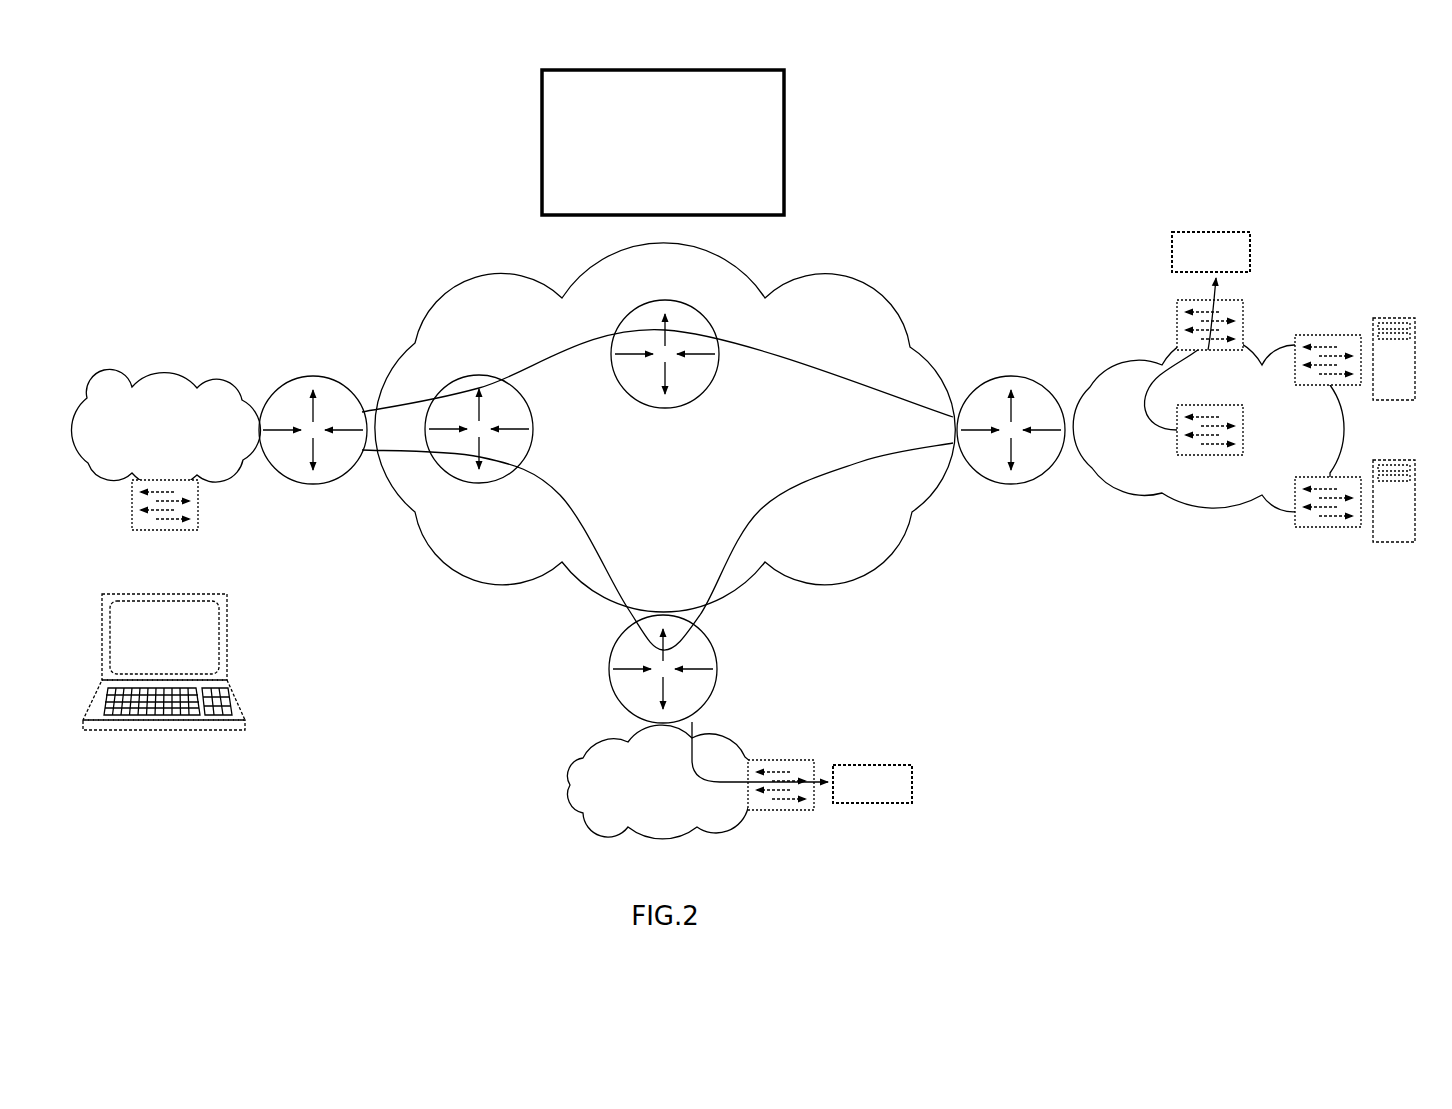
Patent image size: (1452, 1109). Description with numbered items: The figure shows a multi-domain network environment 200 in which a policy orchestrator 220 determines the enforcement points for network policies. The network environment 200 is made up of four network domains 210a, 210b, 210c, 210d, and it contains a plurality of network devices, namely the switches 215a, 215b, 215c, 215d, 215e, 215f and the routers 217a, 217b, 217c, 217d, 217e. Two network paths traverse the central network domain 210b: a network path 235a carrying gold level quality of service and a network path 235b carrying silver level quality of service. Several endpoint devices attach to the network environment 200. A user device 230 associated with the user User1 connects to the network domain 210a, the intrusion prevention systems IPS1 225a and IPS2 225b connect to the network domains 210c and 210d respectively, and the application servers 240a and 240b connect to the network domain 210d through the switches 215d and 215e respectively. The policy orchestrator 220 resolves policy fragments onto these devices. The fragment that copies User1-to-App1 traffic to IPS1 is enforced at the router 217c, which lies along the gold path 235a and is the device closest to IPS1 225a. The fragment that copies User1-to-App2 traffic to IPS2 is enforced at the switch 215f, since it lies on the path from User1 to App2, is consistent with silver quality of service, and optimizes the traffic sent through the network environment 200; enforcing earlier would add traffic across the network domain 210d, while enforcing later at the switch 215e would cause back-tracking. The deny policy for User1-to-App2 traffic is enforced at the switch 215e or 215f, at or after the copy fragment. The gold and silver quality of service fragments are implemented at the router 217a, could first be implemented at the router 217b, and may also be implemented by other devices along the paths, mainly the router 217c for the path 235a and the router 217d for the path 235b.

The network environment 200 is at (347, 194).
The policy orchestrator 220 is at (540, 143).
The network domain 210a is at (145, 373).
The network domain 210b is at (824, 275).
The network domain 210c is at (568, 768).
The network domain 210d is at (1113, 355).
The switch 215a is at (198, 500).
The switch 215b is at (796, 762).
The switch 215c is at (1245, 338).
The switch 215d is at (1320, 386).
The switch 215e is at (1320, 477).
The switch 215f is at (1245, 445).
The router 217a is at (273, 388).
The router 217b is at (519, 387).
The router 217c is at (603, 668).
The router 217d is at (702, 390).
The router 217e is at (1053, 388).
The intrusion prevention system IPS1 225a is at (913, 774).
The intrusion prevention system IPS2 225b is at (1250, 244).
The user device 230 is at (138, 592).
The network path 235a is at (778, 497).
The network path 235b is at (797, 375).
The application server 240a is at (1383, 400).
The application server 240b is at (1383, 542).